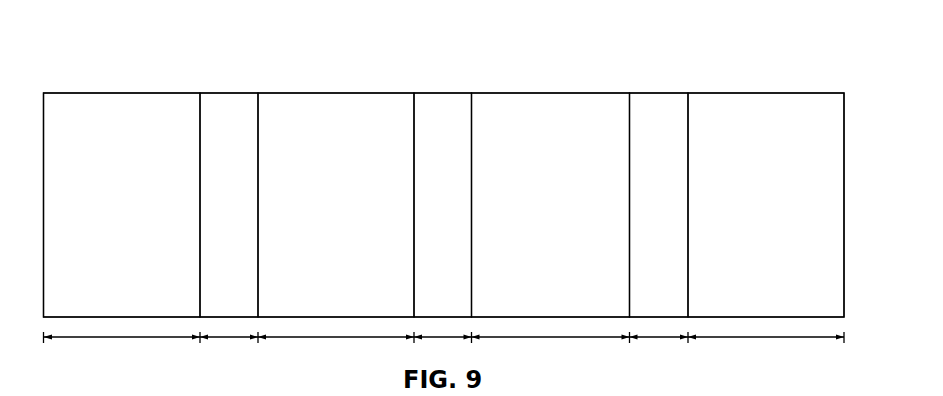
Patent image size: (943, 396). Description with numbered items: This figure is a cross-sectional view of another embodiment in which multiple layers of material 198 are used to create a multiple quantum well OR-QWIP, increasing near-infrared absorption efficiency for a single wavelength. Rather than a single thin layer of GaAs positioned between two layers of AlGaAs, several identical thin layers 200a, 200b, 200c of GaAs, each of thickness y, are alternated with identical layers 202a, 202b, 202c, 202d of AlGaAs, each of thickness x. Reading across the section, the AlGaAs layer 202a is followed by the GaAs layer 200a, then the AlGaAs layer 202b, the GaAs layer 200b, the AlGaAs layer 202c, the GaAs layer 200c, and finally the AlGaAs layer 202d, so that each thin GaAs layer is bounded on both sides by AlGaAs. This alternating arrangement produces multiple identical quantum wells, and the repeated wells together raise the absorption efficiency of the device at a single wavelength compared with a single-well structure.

The multiple layers of material 198 is at (118, 40).
The layer of AlGaAs 202a is at (116, 93).
The thin layer of GaAs 200a is at (228, 93).
The layer of AlGaAs 202b is at (336, 93).
The thin layer of GaAs 200b is at (443, 93).
The layer of AlGaAs 202c is at (550, 93).
The thin layer of GaAs 200c is at (658, 93).
The layer of AlGaAs 202d is at (765, 93).